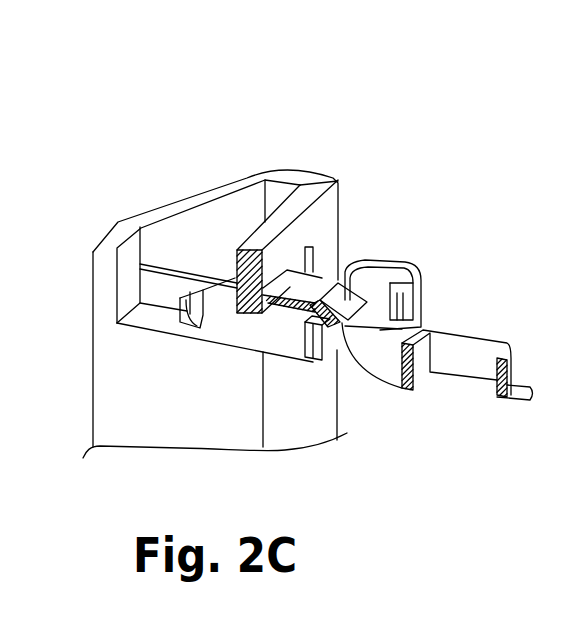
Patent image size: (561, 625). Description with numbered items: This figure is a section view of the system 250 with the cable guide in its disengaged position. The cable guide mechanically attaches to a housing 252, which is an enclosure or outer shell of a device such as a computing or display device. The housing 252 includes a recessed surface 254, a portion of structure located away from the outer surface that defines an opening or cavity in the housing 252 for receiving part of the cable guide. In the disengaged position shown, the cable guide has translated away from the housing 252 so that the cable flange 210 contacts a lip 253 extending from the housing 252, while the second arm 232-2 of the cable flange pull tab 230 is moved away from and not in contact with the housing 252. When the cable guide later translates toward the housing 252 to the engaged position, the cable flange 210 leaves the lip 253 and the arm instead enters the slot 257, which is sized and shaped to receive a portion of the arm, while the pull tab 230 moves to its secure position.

The system 250 is at (106, 72).
The housing 252 is at (152, 200).
The recessed surface 254 is at (221, 227).
The slot 257 is at (310, 252).
The lip 253 is at (332, 280).
The second arm 232-2 is at (420, 273).
The pull tab 230 is at (420, 370).
The cable flange 210 is at (243, 347).